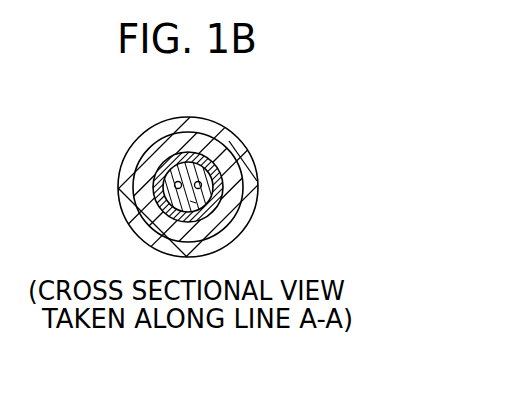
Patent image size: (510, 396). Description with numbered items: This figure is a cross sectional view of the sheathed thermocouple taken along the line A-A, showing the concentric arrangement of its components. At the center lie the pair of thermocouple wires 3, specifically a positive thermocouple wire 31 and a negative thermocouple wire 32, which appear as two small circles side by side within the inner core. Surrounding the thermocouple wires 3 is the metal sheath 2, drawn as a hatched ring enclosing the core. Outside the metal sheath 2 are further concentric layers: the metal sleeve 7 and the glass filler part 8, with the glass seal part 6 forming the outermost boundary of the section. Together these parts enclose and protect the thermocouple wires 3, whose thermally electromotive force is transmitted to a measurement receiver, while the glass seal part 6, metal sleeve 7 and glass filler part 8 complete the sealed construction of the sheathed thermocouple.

The metal sheath 2 is at (224, 184).
The pair of thermocouple wires 3 is at (188, 187).
The positive thermocouple wire 31 is at (195, 182).
The negative thermocouple wire 32 is at (175, 183).
The glass seal part 6 is at (246, 228).
The metal sleeve 7 is at (234, 141).
The glass filler part 8 is at (214, 146).